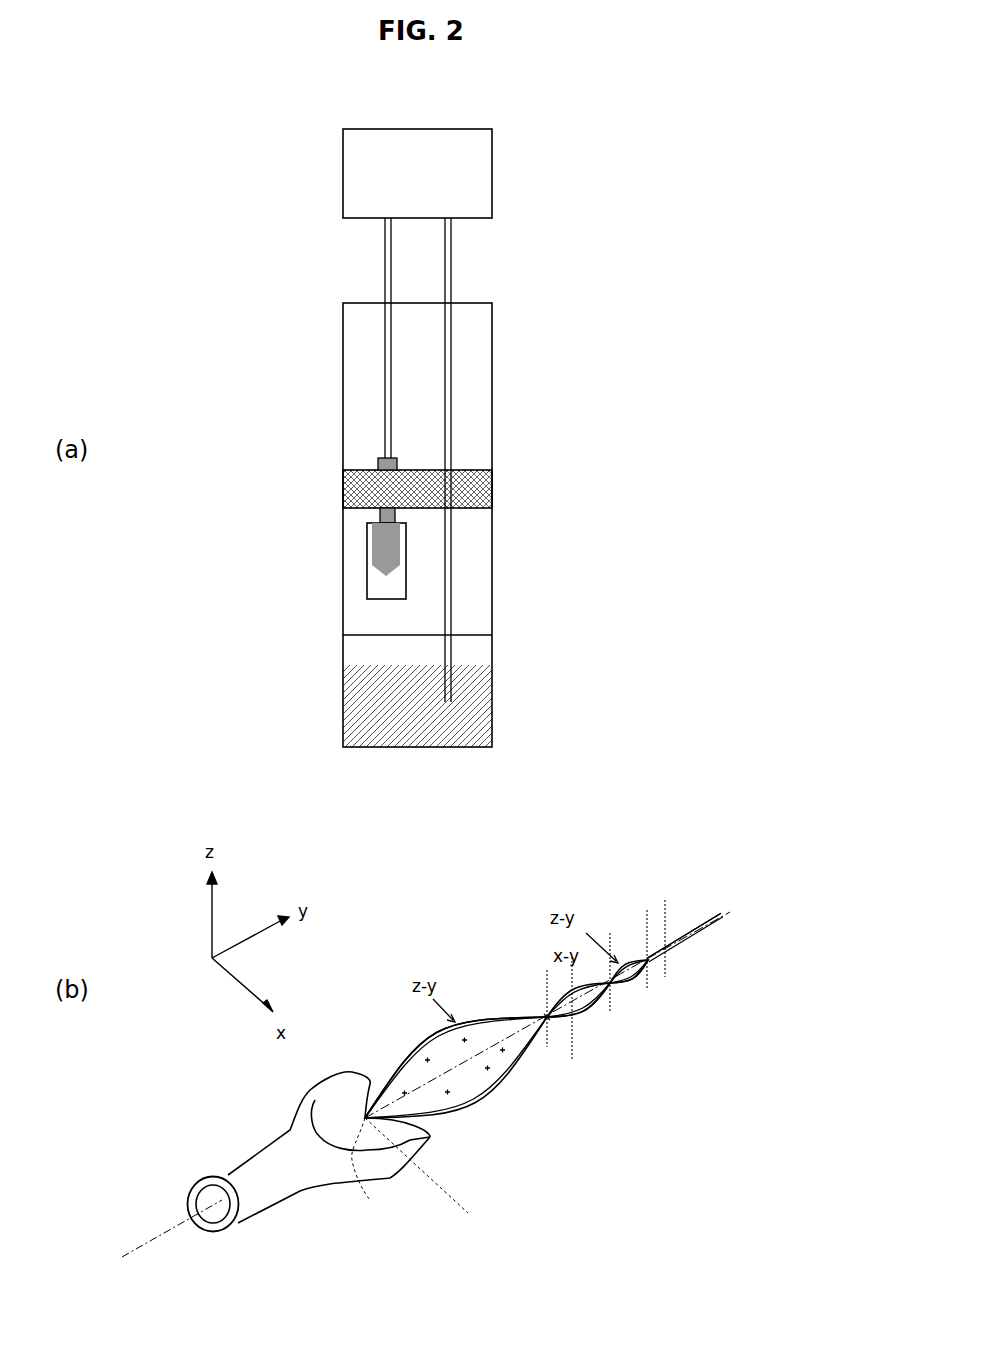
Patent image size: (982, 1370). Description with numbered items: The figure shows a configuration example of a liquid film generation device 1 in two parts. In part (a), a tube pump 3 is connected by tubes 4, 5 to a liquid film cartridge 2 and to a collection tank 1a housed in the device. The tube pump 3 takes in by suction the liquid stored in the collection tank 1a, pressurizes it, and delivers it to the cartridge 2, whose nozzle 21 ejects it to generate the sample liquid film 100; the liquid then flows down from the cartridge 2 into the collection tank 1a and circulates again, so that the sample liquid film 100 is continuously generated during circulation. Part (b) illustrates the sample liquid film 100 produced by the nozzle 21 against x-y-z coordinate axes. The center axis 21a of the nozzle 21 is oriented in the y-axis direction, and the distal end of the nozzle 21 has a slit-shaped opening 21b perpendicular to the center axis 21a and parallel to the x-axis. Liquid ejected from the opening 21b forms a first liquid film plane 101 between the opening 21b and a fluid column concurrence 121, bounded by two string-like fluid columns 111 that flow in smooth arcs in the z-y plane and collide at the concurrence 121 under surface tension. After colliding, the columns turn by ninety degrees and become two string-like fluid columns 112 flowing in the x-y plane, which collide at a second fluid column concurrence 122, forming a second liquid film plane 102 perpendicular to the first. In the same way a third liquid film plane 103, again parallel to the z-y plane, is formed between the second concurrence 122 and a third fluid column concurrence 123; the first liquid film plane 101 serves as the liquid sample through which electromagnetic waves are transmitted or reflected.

The container 1 is at (343, 374).
The collection tank 1a is at (367, 683).
The liquid film cartridge 2 is at (367, 528).
The tube pump 3 is at (492, 175).
The first tube 4 is at (385, 270).
The second tube 5 is at (451, 270).
The sample liquid film 100 is at (385, 552).
The nozzle 21 is at (272, 1190).
The center axis 21a is at (170, 1228).
The slit-shaped opening 21b is at (373, 1183).
The first liquid film plane 101 is at (443, 1090).
The second liquid film plane 102 is at (598, 1012).
The third liquid film plane 103 is at (638, 957).
The string-like fluid columns 111 is at (421, 1042).
The string-like fluid columns 112 is at (553, 981).
The fluid column concurrence 121 is at (546, 1013).
The second fluid column concurrence 122 is at (630, 981).
The third fluid column concurrence 123 is at (652, 975).